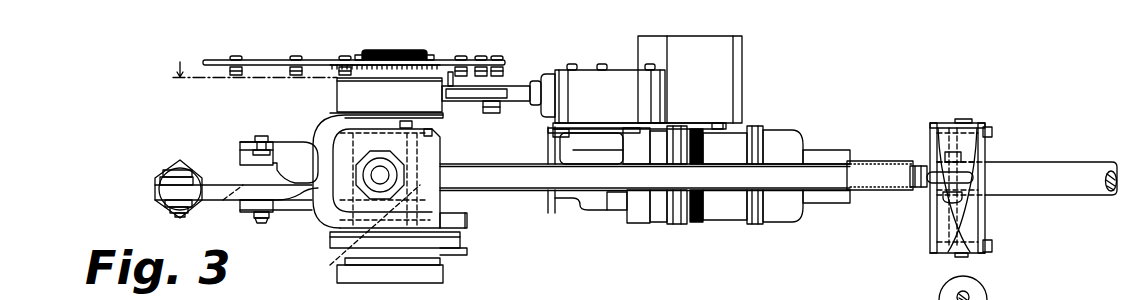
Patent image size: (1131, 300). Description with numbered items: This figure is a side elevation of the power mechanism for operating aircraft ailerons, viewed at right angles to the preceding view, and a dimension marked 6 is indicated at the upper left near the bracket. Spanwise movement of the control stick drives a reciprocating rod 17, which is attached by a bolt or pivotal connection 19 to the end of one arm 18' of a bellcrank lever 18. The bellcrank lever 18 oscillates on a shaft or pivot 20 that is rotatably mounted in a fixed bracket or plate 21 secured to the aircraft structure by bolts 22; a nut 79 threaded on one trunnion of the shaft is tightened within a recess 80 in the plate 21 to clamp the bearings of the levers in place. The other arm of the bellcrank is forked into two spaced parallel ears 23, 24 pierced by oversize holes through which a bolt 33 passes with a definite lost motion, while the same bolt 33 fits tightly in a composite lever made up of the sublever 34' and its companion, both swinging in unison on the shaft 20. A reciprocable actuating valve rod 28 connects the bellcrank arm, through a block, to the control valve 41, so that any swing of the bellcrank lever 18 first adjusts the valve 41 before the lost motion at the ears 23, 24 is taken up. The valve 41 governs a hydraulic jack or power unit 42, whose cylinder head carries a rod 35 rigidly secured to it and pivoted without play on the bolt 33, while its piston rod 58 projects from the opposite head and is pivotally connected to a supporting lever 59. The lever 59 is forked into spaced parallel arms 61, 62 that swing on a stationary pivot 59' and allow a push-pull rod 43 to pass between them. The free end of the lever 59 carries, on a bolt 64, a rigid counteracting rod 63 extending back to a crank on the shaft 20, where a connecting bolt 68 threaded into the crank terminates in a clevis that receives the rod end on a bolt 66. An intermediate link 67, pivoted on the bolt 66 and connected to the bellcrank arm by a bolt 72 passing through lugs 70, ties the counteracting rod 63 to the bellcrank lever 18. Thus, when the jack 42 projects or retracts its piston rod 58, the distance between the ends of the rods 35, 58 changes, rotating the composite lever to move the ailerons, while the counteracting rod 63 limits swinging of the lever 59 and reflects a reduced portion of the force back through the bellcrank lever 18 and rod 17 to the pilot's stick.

The dimension / offset 6 is at (255, 79).
The reciprocating rod 17 is at (182, 171).
The bellcrank lever 18 is at (233, 176).
The arm of bellcrank lever 18' is at (196, 211).
The bolt or pivotal connection 19 is at (156, 182).
The shaft or pivot 20 is at (395, 50).
The bracket or plate 21 is at (333, 62).
The bolts 22 is at (242, 60).
The ear 23 is at (433, 132).
The ear 24 is at (448, 217).
The actuating valve rod 28 is at (466, 103).
The bolt 33 is at (402, 222).
The sublever 34' is at (375, 103).
The cylinder rod 35 is at (488, 164).
The control valve 41 is at (650, 50).
The hydraulic jack or power unit 42 is at (724, 207).
The push-pull rod 43 is at (1050, 156).
The piston rod 58 is at (915, 168).
The supporting lever 59 is at (957, 178).
The stationary pivot 59' is at (982, 199).
The arm of supporting lever 61 is at (992, 131).
The arm of supporting lever 62 is at (990, 249).
The counteracting rod 63 is at (893, 182).
The bolt 64 is at (945, 205).
The bolt 66 is at (340, 262).
The intermediate link 67 is at (302, 146).
The connecting bolt 68 is at (358, 176).
The lugs or shoulders 70 is at (250, 155).
The bolt 72 is at (260, 136).
The nut 79 is at (361, 55).
The recess 80 is at (429, 56).